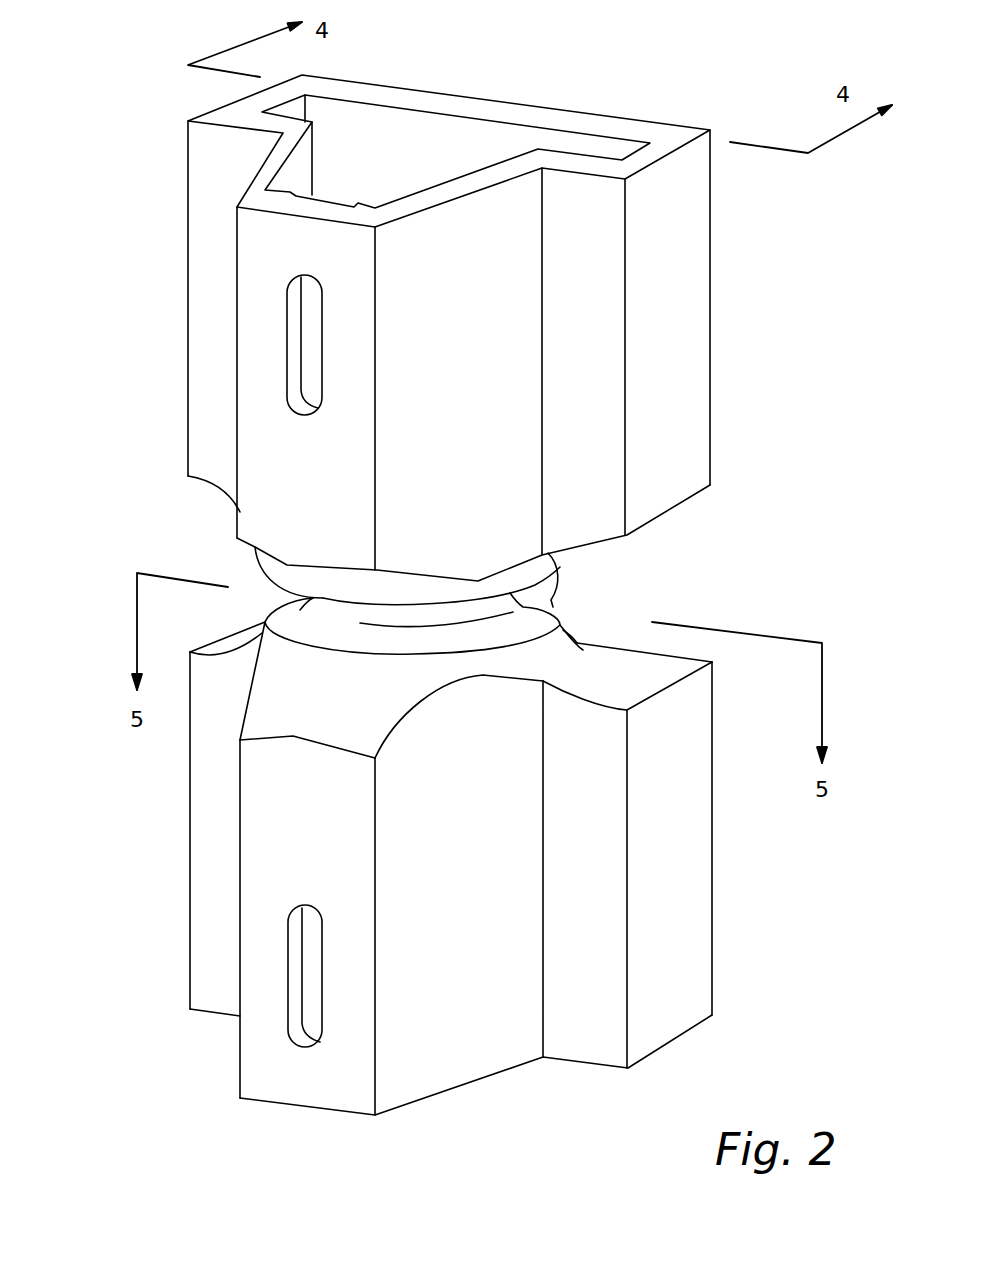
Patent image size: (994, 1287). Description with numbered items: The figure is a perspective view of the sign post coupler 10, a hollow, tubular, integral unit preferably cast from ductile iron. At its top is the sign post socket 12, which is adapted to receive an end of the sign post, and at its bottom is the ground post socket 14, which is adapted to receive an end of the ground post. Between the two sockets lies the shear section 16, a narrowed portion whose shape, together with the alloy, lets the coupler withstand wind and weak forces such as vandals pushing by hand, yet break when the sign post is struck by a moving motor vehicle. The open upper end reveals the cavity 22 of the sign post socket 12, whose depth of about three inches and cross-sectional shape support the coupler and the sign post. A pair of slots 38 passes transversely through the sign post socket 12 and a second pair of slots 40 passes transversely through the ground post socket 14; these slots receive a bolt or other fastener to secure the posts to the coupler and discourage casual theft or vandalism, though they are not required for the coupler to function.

The sign post coupler 10 is at (183, 1043).
The sign post socket 12 is at (189, 250).
The ground post socket 14 is at (712, 880).
The shear section 16 is at (553, 607).
The cavity 22 is at (398, 148).
The slots 38 is at (287, 353).
The slots 40 is at (312, 905).